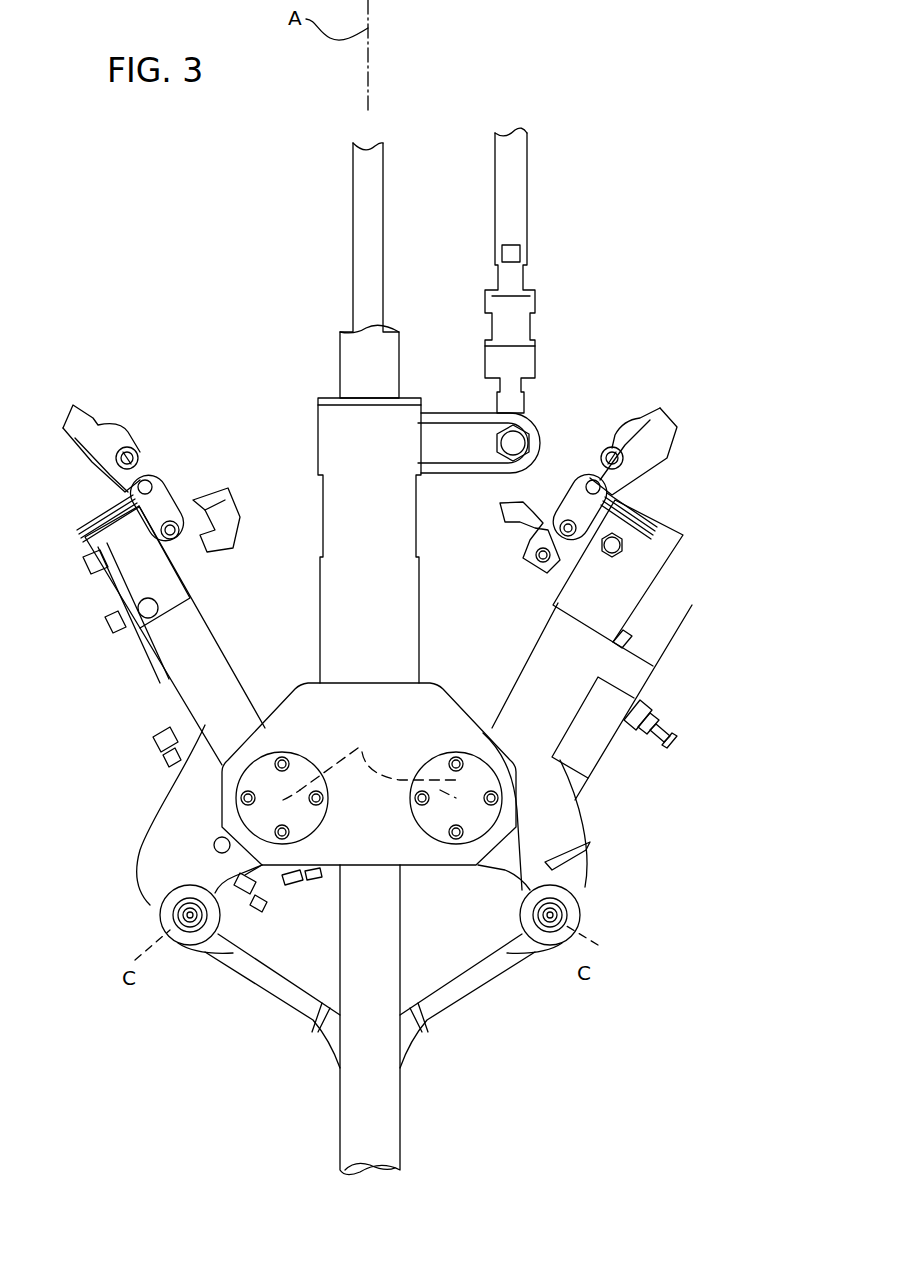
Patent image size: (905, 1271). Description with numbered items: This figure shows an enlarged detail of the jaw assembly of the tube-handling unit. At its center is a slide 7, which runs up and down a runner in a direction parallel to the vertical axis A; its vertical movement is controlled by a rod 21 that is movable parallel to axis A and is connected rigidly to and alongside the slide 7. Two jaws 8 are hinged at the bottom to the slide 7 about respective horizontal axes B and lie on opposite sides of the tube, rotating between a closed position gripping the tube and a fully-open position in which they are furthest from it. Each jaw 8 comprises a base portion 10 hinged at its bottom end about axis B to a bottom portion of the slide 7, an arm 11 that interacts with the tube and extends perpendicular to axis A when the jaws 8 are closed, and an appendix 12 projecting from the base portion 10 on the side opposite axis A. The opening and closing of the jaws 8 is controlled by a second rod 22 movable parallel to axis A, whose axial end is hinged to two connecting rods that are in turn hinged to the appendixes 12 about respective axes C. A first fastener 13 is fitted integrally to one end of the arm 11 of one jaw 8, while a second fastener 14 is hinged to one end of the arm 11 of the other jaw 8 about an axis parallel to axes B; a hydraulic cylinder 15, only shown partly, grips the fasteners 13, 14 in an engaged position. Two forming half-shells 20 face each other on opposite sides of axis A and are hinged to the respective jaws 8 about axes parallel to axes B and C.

The slide 7 is at (313, 688).
The jaws 8 is at (75, 705).
The base portion 10 is at (220, 670).
The arm 11 is at (123, 580).
The appendix 12 is at (145, 862).
The first fastener 13 is at (210, 563).
The second fastener 14 is at (520, 510).
The hydraulic cylinder 15 is at (560, 580).
The forming half-shells 20 is at (70, 413).
The rod 21 is at (520, 153).
The rod 22 is at (355, 178).